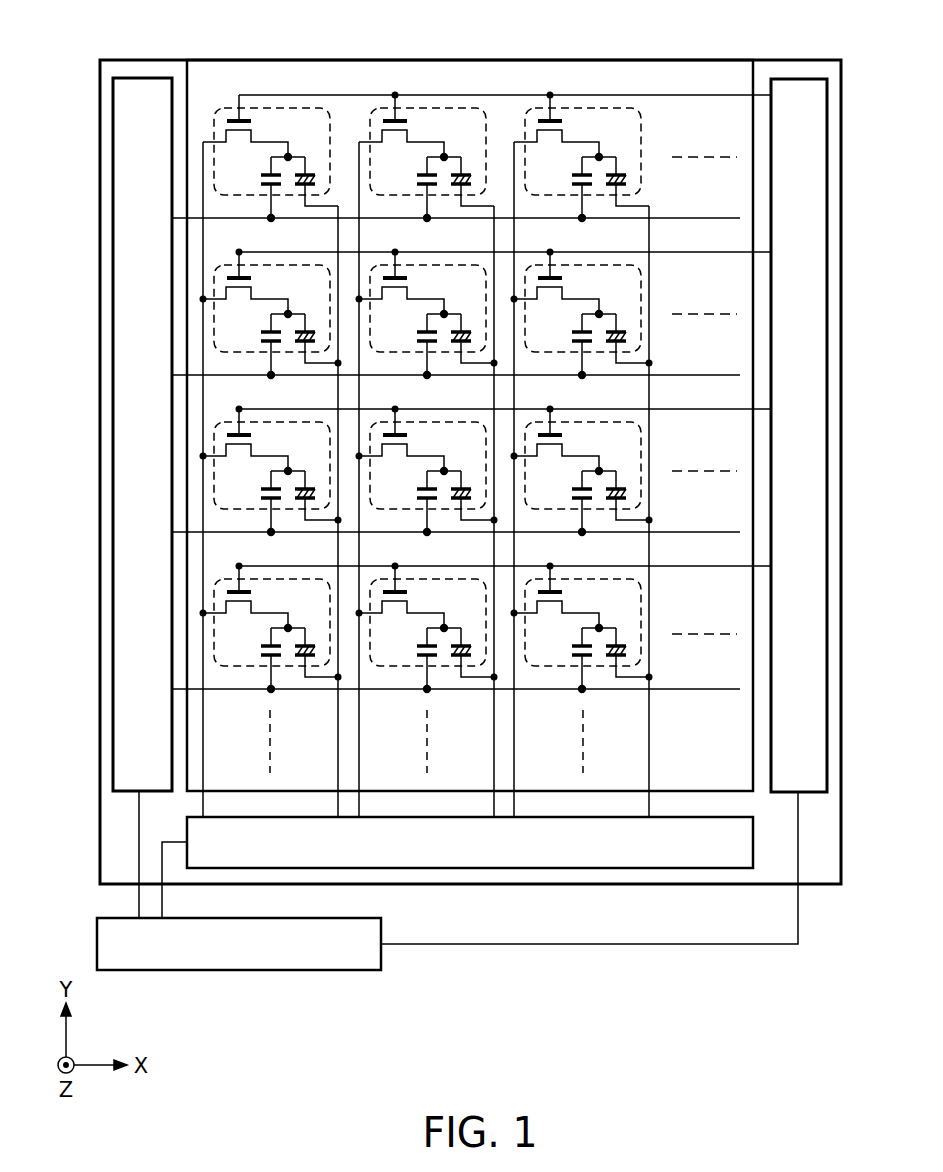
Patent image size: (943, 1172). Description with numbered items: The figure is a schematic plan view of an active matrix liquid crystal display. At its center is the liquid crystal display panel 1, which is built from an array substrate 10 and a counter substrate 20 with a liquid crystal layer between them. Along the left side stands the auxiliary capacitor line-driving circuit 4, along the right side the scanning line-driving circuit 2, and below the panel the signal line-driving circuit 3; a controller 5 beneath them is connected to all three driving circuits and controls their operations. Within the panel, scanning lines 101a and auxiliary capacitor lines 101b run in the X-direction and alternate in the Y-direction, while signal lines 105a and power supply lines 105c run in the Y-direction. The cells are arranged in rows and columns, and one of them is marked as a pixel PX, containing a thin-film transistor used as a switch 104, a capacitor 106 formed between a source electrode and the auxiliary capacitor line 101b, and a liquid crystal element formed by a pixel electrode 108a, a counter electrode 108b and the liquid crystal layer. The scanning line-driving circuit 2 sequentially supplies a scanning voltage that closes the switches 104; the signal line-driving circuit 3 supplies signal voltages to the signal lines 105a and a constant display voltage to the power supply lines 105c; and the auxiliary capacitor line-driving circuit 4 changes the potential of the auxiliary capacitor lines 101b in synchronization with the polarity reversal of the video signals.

The liquid crystal display panel 1 is at (423, 472).
The scanning line-driving circuit 2 is at (800, 79).
The signal line-driving circuit 3 is at (641, 869).
The auxiliary capacitor line-driving circuit 4 is at (150, 78).
The controller 5 is at (325, 972).
The array substrate 10 is at (99, 757).
The counter substrate 20 is at (186, 707).
The scanning line 101a is at (697, 565).
The auxiliary capacitor line 101b is at (697, 690).
The switch 104 is at (563, 593).
The signal line 105a is at (514, 740).
The power supply line 105c is at (649, 740).
The capacitor 106 is at (572, 651).
The pixel electrode 108a is at (618, 640).
The counter electrode 108b is at (622, 653).
The pixel PX is at (615, 648).